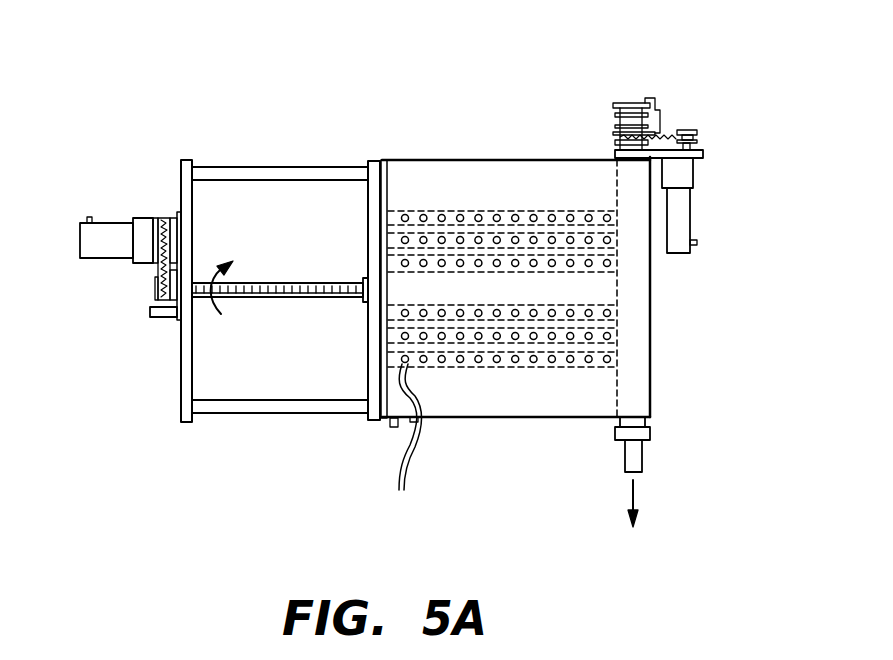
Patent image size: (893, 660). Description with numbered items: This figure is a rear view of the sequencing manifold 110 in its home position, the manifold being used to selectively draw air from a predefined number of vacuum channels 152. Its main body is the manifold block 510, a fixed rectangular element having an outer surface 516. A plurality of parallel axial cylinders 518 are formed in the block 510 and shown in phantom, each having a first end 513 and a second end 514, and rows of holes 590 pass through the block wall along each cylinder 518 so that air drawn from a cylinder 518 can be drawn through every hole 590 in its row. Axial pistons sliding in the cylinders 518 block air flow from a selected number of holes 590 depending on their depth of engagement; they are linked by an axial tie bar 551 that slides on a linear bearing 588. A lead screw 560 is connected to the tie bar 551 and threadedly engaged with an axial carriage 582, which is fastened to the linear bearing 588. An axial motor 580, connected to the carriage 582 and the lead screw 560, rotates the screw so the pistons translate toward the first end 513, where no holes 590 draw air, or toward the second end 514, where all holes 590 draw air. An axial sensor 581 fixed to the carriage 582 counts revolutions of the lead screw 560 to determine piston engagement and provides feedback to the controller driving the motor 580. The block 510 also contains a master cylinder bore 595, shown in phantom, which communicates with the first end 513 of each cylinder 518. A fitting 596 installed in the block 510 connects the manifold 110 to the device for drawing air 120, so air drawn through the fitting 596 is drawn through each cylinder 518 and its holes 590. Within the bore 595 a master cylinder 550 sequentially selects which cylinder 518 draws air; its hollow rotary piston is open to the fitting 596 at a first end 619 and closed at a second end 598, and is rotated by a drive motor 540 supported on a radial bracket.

The sequencing manifold 110 is at (236, 85).
The device for drawing air 120 is at (715, 518).
The vacuum channels 152 is at (405, 434).
The manifold block 510 is at (468, 421).
The first end 513 is at (606, 217).
The second end 514 is at (385, 212).
The outer surface 516 is at (567, 405).
The axial cylinders 518 is at (485, 367).
The drive motor 540 is at (678, 233).
The master cylinder 550 is at (615, 149).
The axial tie bar 551 is at (377, 193).
The lead screw 560 is at (332, 292).
The axial motor 580 is at (103, 247).
The axial sensor 581 is at (155, 310).
The axial carriage 582 is at (188, 385).
The linear bearing 588 is at (275, 405).
The holes 590 is at (440, 215).
The master cylinder bore 595 is at (670, 338).
The fitting 596 is at (632, 462).
The second end 598 is at (643, 177).
The first end 619 is at (648, 418).